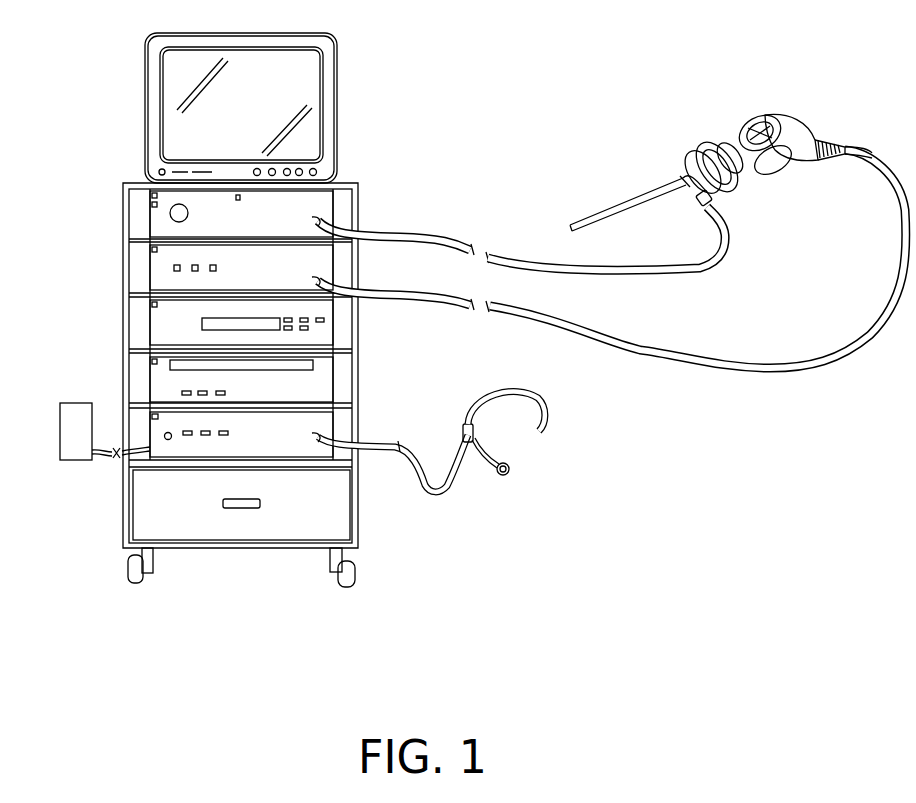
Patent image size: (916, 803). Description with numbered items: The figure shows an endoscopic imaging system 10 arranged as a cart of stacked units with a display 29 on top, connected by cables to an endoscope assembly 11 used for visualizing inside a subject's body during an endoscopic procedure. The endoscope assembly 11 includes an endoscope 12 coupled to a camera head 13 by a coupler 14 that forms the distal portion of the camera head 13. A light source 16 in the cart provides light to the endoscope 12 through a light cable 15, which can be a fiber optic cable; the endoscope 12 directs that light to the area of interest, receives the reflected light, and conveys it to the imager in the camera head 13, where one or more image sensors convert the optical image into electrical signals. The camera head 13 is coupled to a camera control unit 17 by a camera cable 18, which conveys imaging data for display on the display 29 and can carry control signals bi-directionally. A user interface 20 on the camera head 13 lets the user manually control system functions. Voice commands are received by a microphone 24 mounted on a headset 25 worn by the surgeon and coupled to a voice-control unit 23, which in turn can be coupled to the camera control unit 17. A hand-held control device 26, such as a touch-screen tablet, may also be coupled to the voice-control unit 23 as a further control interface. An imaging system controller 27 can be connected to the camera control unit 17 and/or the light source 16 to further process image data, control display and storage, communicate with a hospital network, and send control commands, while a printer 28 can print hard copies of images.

The endoscopic imaging system 10 is at (70, 92).
The endoscope assembly 11 is at (833, 106).
The endoscope 12 is at (612, 196).
The camera head 13 is at (797, 160).
The coupler 14 is at (700, 150).
The light cable 15 is at (422, 232).
The light source 16 is at (130, 207).
The camera control unit 17 is at (130, 266).
The camera cable 18 is at (413, 295).
The user interface 20 is at (750, 115).
The voice-control unit 23 is at (340, 423).
The microphone 24 is at (507, 474).
The headset 25 is at (546, 391).
The hand-held control device 26 is at (105, 431).
The imaging system controller 27 is at (128, 322).
The printer 28 is at (128, 372).
The display 29 is at (338, 78).